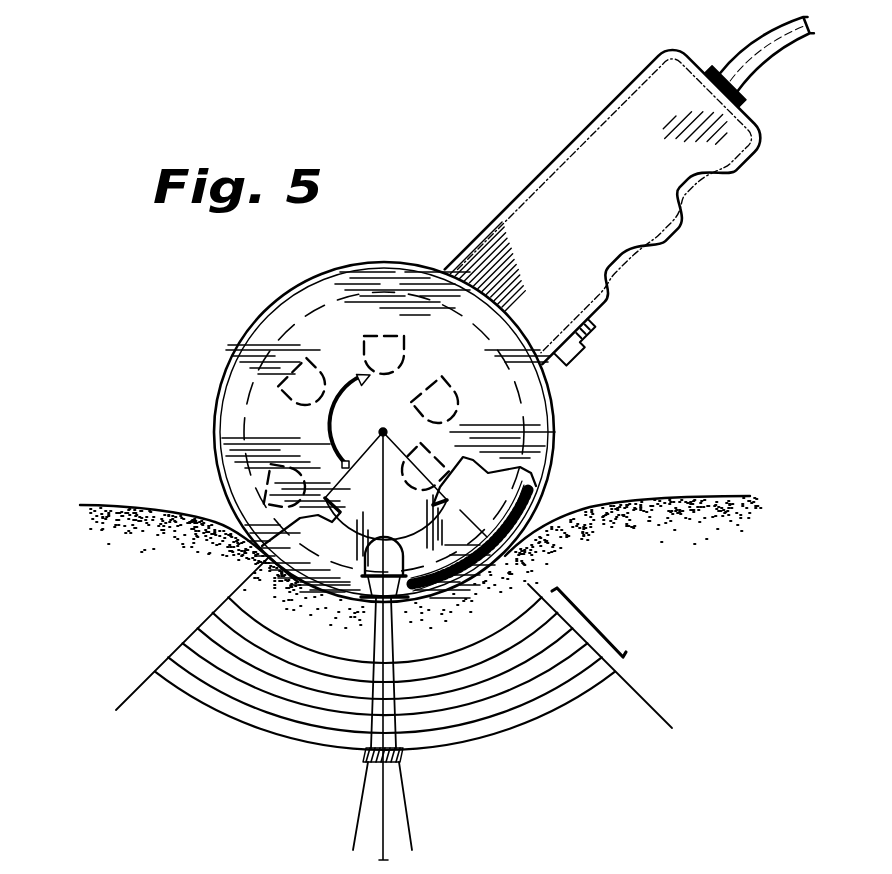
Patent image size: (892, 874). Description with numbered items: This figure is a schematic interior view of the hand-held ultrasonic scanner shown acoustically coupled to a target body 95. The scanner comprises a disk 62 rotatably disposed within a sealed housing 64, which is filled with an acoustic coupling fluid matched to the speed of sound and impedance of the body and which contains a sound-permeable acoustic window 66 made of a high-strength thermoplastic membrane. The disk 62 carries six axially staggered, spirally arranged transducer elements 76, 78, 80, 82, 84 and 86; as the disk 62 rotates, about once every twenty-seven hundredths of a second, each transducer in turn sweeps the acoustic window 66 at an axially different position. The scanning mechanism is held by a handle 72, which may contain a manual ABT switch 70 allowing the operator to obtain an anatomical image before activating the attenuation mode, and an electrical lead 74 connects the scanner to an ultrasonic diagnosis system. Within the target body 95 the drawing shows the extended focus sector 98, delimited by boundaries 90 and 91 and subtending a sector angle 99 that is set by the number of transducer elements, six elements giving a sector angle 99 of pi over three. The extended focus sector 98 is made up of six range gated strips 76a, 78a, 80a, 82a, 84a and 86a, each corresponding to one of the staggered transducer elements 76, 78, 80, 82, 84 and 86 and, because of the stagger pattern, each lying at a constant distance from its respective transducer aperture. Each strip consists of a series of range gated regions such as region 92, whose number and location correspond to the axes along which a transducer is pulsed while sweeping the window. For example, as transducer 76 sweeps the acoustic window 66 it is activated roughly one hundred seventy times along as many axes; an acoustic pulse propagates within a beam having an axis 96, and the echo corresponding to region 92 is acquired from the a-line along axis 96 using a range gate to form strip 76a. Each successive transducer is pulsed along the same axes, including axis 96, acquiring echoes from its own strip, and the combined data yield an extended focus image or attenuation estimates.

The disk 62 is at (456, 350).
The sealed housing 64 is at (217, 392).
The acoustic window 66 is at (520, 566).
The manual ABT switch 70 is at (588, 353).
The handle 72 is at (648, 180).
The electrical lead 74 is at (752, 72).
The transducer element 76 is at (322, 584).
The transducer element 78 is at (263, 462).
The transducer element 80 is at (307, 362).
The transducer element 82 is at (374, 336).
The transducer element 84 is at (455, 393).
The transducer element 86 is at (433, 462).
The range gated strip 76a is at (158, 674).
The range gated strip 78a is at (172, 660).
The range gated strip 80a is at (186, 645).
The range gated strip 82a is at (201, 631).
The range gated strip 84a is at (216, 615).
The range gated strip 86a is at (231, 600).
The boundary 90 is at (120, 706).
The boundary 91 is at (665, 712).
The range gated region 92 is at (363, 758).
The target body 95 is at (714, 567).
The axis 96 is at (384, 858).
The extended focus sector 98 is at (596, 620).
The sector angle 99 is at (350, 518).